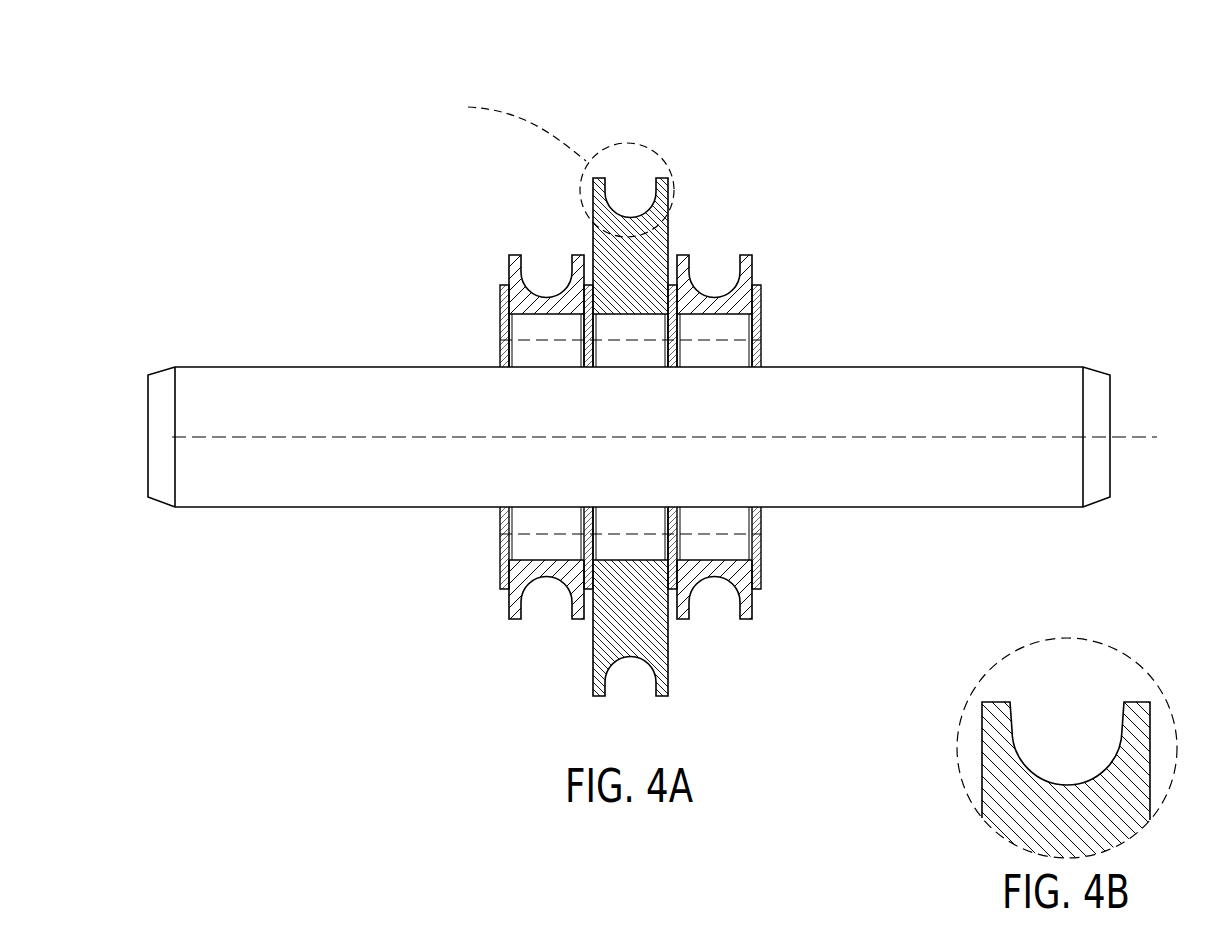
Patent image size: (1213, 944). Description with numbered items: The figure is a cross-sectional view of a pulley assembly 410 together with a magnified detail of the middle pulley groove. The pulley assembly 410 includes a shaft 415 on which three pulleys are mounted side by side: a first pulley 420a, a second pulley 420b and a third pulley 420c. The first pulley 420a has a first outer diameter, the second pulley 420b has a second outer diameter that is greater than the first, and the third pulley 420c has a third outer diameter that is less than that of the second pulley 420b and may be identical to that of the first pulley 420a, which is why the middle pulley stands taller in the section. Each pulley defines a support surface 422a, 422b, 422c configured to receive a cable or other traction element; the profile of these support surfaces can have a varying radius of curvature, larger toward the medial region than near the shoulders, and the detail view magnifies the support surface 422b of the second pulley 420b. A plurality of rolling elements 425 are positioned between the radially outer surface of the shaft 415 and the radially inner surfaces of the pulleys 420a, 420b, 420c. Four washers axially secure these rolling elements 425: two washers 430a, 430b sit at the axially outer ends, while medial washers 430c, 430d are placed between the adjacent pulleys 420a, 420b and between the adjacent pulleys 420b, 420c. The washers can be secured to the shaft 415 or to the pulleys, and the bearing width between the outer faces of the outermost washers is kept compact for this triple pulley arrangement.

In FIG. 4A, the pulley assembly 410 is at (900, 340).
In FIG. 4A, the shaft 415 is at (380, 420).
In FIG. 4A, the first pulley 420a is at (517, 297).
In FIG. 4A, the second pulley 420b is at (615, 620).
In FIG. 4B, the second pulley 420b is at (1010, 806).
In FIG. 4A, the third pulley 420c is at (737, 297).
In FIG. 4A, the support surface 422a is at (557, 293).
In FIG. 4A, the support surface 422b is at (633, 653).
In FIG. 4B, the support surface 422b is at (1070, 785).
In FIG. 4A, the support surface 422c is at (700, 290).
In FIG. 4A, the rolling elements 425 is at (722, 322).
In FIG. 4A, the washer 430a is at (503, 348).
In FIG. 4A, the washer 430b is at (752, 532).
In FIG. 4A, the medial washer 430c is at (583, 537).
In FIG. 4A, the medial washer 430d is at (669, 538).